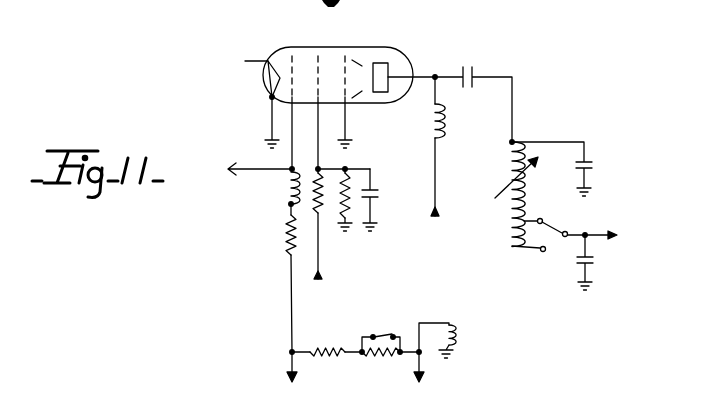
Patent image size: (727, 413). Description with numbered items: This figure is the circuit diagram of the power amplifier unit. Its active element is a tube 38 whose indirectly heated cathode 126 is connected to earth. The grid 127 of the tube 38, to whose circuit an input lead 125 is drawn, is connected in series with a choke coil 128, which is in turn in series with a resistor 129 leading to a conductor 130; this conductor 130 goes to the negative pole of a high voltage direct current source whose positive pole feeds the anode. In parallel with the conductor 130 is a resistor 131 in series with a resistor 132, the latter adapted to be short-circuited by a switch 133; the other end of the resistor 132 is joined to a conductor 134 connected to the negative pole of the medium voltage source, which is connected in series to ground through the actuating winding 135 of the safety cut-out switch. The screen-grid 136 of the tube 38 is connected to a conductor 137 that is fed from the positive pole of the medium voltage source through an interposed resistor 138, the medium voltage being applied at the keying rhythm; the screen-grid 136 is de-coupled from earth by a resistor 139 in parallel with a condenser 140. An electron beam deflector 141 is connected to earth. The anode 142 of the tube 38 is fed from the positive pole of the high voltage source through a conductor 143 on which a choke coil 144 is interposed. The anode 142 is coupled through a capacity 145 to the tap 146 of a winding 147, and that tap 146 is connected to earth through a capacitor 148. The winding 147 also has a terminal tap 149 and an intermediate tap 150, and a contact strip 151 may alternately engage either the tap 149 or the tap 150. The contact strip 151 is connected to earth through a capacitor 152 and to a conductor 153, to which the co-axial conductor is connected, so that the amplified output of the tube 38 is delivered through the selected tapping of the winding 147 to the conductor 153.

The tube 38 is at (373, 47).
The input terminal 125 is at (238, 170).
The indirectly heated cathode 126 is at (265, 86).
The grid 127 is at (292, 86).
The choke coil 128 is at (288, 188).
The resistor 129 is at (285, 240).
The conductor 130 is at (290, 360).
The resistor 131 is at (314, 348).
The resistor 132 is at (375, 355).
The switch 133 is at (377, 333).
The conductor 134 is at (423, 366).
The actuating winding 135 is at (450, 328).
The screen-grid 136 is at (333, 45).
The conductor 137 is at (322, 262).
The resistor 138 is at (322, 202).
The resistor 139 is at (352, 178).
The condenser 140 is at (377, 190).
The electron beam deflector 141 is at (383, 72).
The anode 142 is at (412, 72).
The conductor 143 is at (437, 162).
The choke coil 144 is at (444, 118).
The capacity 145 is at (476, 74).
The tap 146 is at (517, 142).
The winding 147 is at (551, 142).
The capacitor 148 is at (590, 160).
The terminal tap 149 is at (542, 252).
The intermediate tap 150 is at (543, 218).
The contact strip 151 is at (560, 229).
The capacitor 152 is at (590, 258).
The conductor 153 is at (600, 230).